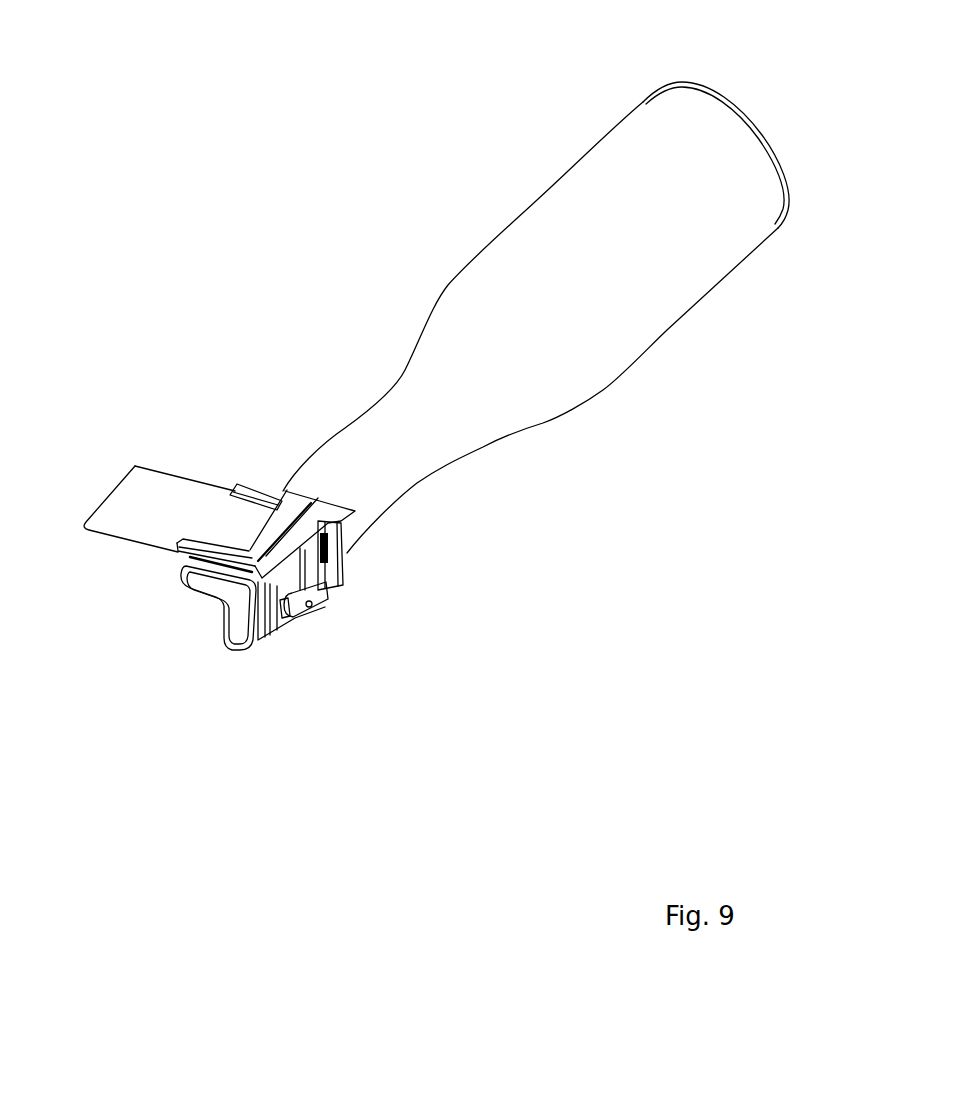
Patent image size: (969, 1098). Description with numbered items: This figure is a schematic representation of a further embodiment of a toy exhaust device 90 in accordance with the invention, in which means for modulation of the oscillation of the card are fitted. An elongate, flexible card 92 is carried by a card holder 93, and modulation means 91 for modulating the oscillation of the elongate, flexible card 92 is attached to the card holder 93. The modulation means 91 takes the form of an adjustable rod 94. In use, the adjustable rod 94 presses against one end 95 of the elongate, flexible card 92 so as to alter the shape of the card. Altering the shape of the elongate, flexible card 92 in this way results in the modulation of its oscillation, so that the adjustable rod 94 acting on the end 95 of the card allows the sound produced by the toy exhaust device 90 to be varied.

The toy exhaust device 90 is at (150, 127).
The means for modulation of the oscillation 91 is at (328, 585).
The elongate, flexible card 92 is at (148, 502).
The card holder 93 is at (283, 495).
The adjustable rod 94 is at (322, 603).
The end of the elongate, flexible card 95 is at (324, 505).